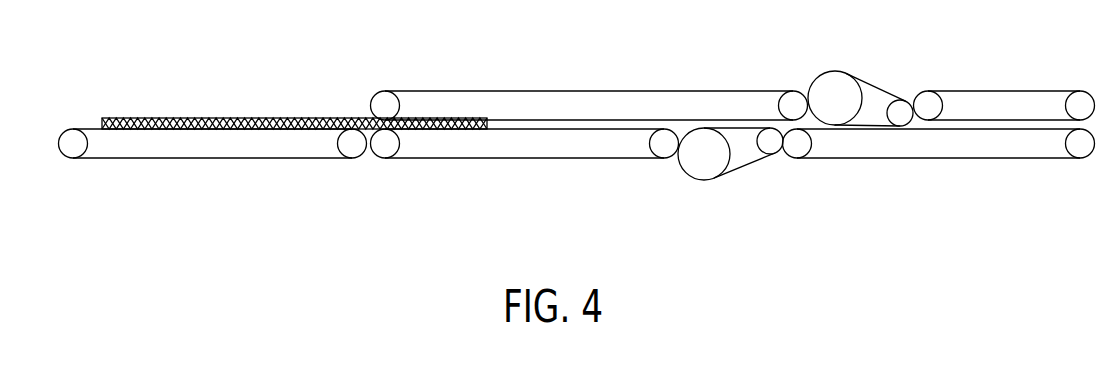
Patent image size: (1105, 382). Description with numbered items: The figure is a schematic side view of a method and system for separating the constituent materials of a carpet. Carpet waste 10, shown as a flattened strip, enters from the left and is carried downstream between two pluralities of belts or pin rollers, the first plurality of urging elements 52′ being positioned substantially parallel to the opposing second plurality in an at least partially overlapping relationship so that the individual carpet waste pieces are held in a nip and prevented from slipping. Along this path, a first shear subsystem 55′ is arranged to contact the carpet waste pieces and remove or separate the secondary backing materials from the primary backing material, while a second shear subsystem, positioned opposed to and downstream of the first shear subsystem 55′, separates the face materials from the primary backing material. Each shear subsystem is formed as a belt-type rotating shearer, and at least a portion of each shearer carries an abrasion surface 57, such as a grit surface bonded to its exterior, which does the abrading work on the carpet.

The carpet waste 10 is at (253, 112).
The first plurality of urging elements 52′ is at (467, 87).
The first shear subsystem 55′ is at (690, 182).
The abrasion surface 57 is at (883, 82).